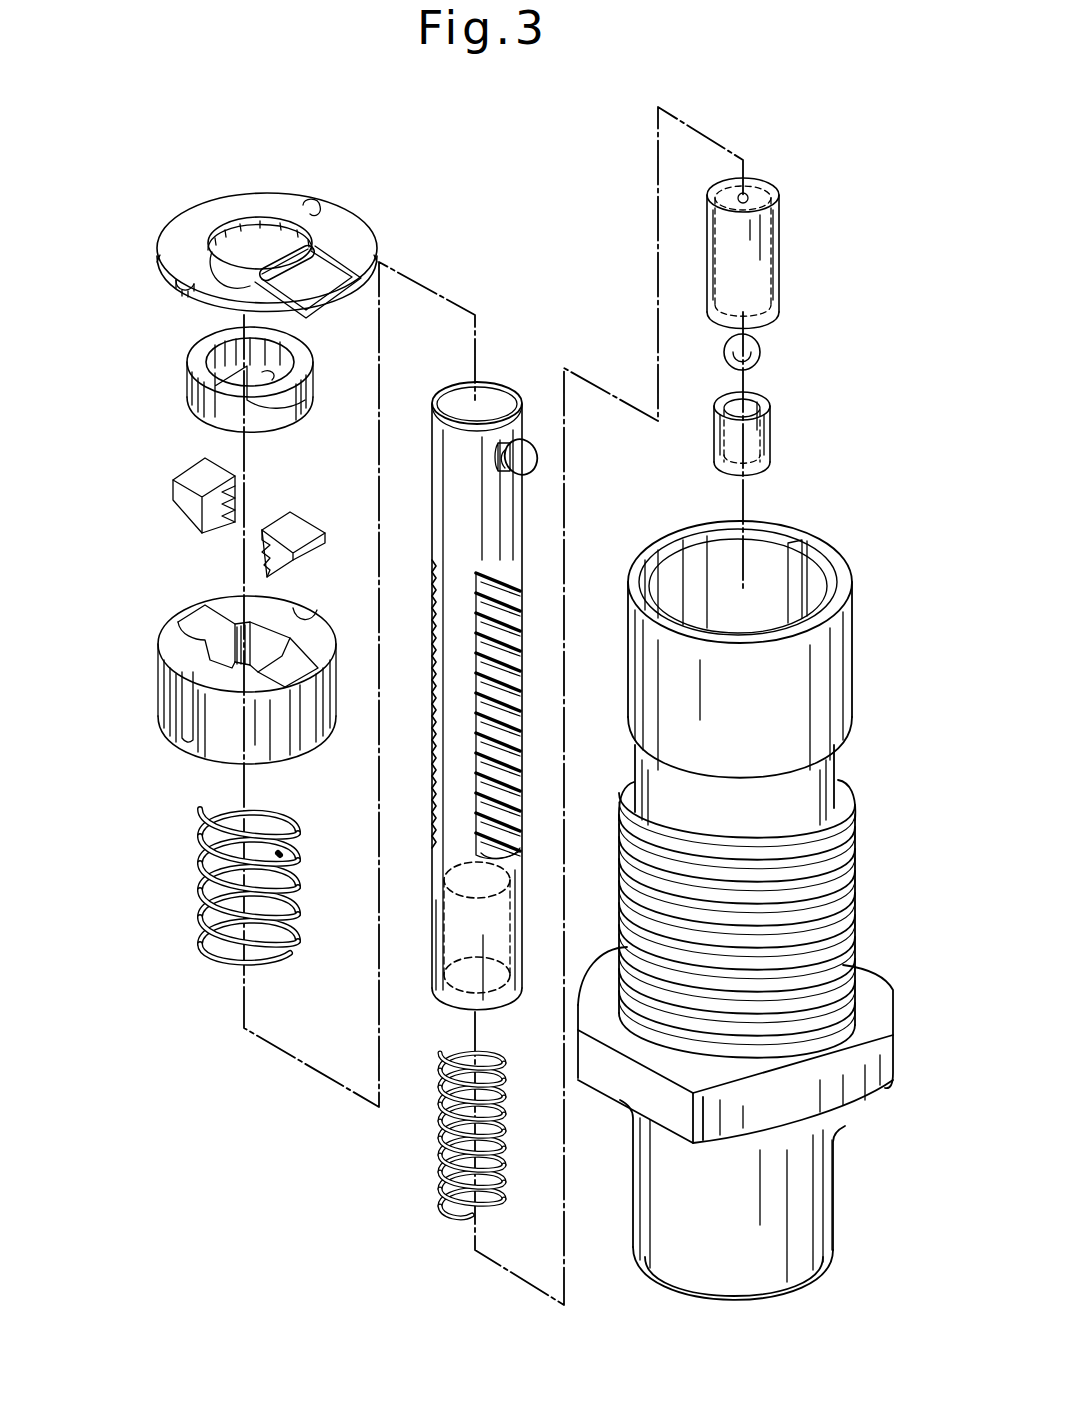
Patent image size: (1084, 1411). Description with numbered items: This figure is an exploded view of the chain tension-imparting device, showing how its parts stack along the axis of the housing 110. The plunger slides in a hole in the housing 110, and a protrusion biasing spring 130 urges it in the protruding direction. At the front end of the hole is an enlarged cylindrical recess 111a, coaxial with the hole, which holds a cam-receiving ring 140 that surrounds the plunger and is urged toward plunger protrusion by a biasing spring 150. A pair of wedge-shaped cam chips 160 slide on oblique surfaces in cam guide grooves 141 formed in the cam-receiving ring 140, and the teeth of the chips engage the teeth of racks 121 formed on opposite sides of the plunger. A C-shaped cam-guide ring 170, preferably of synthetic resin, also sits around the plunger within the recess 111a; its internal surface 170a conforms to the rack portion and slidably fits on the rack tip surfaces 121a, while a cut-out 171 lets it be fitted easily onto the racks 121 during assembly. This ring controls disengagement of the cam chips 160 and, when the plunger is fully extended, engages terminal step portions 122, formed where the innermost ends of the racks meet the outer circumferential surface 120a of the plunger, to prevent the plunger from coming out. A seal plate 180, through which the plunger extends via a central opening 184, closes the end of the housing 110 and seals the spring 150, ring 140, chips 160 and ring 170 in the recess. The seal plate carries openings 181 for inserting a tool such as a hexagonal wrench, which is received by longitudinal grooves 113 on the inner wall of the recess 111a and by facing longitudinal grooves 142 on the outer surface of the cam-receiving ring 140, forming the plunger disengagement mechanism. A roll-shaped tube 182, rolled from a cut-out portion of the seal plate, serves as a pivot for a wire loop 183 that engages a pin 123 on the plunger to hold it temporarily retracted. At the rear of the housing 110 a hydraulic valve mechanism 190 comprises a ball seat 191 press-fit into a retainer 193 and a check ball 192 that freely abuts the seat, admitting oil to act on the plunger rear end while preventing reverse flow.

The housing 110 is at (764, 891).
The enlarged cylindrical recess 111a is at (723, 568).
The longitudinal grooves 113 is at (803, 542).
The outer circumferential surface of the plunger 120a is at (518, 932).
The racks 121 is at (513, 617).
The rack tip surfaces 121a is at (505, 813).
The terminal step portions 122 is at (475, 666).
The pin 123 is at (527, 452).
The protrusion biasing spring 130 is at (440, 1162).
The cam-receiving ring 140 is at (243, 680).
The cam guide grooves 141 is at (198, 623).
The longitudinal grooves 142 is at (305, 615).
The biasing spring 150 is at (203, 887).
The wedge-shaped cam chips 160 is at (198, 470).
The cam-guide ring 170 is at (229, 382).
The internal surface 170a is at (265, 377).
The cut-out 171 is at (215, 413).
The seal plate 180 is at (260, 220).
The openings 181 is at (318, 213).
The roll-shaped tube 182 is at (287, 260).
The wire loop 183 is at (343, 277).
The central opening 184 is at (227, 253).
The hydraulic valve mechanism 190 is at (822, 327).
The ball seat 191 is at (787, 434).
The check ball 192 is at (760, 350).
The retainer 193 is at (782, 255).